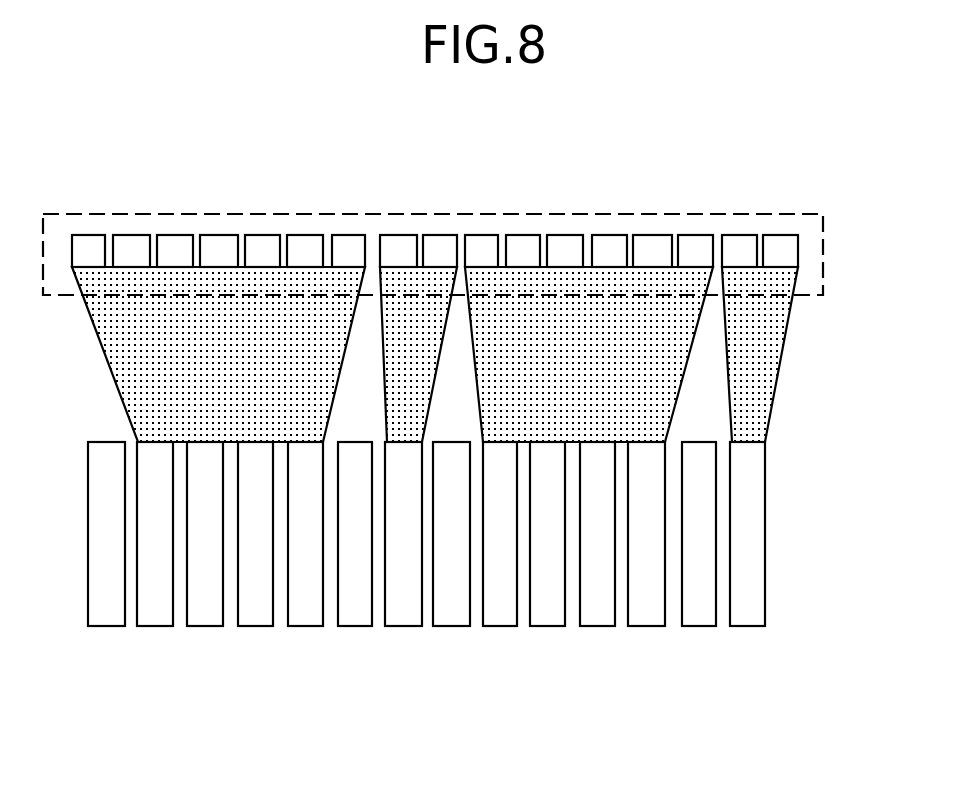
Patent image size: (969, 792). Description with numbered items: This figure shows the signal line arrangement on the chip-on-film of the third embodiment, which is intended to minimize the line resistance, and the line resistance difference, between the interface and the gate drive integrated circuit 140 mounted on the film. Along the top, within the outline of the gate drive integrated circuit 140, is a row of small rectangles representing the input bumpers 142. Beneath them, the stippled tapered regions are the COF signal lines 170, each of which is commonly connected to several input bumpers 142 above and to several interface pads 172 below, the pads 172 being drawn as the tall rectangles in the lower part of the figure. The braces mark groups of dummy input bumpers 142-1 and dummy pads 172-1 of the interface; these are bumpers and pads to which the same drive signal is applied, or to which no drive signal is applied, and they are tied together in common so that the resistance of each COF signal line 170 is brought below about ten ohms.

The gate drive integrated circuit 140 is at (823, 228).
The input bumper 142 is at (792, 258).
The dummy input bumpers 142-1 is at (795, 226).
The COF signal line 170 is at (786, 358).
The interface pads 172 is at (765, 550).
The dummy pads 172-1 is at (310, 635).